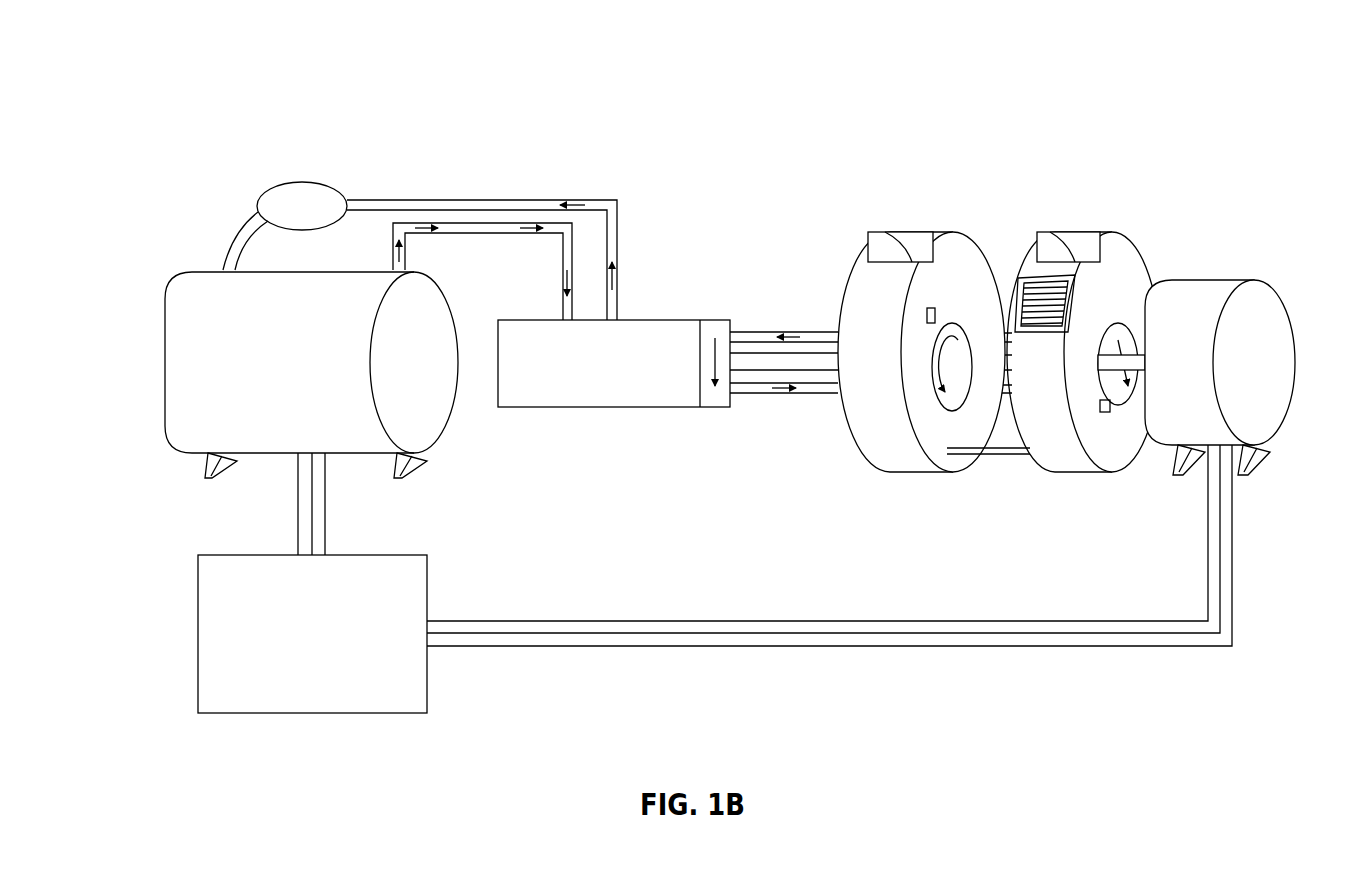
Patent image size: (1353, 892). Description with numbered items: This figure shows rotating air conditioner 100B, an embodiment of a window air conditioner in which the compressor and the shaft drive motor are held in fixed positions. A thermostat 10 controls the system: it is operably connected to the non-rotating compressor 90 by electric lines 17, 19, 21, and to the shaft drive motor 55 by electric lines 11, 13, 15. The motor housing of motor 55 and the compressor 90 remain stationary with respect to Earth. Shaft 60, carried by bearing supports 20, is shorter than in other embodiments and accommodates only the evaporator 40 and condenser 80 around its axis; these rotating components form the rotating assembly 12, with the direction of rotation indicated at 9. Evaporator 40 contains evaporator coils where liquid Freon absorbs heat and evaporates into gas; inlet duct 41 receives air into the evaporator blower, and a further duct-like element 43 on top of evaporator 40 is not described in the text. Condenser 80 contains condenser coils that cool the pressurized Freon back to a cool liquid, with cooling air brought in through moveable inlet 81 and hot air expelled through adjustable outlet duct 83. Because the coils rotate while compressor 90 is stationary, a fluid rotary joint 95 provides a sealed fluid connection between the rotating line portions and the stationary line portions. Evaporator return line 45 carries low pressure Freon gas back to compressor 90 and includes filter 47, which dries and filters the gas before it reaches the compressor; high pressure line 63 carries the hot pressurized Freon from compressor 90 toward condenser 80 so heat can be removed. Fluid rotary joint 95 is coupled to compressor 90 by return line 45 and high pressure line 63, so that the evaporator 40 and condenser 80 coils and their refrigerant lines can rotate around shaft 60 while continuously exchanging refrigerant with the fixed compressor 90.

The rotating air conditioner 100B is at (223, 98).
The rotation direction arrow 9 is at (976, 404).
The thermostat 10 is at (220, 714).
The electric line 11 is at (639, 620).
The rotary heater assembly 12 is at (952, 210).
The electric line 13 is at (789, 632).
The electric line 15 is at (690, 647).
The electric line 17 is at (297, 522).
The electric line 19 is at (314, 546).
The bearing support 20 is at (990, 456).
The electric line 21 is at (327, 516).
The evaporator 40 is at (900, 473).
The inlet duct 41 is at (926, 313).
The inlet block 43 is at (900, 232).
The evaporator return line 45 is at (462, 200).
The filter 47 is at (302, 182).
The shaft drive motor 55 is at (1265, 303).
The shaft 60 is at (1126, 344).
The high pressure line 63 is at (512, 234).
The condenser 80 is at (1070, 473).
The moveable inlet 81 is at (1099, 413).
The adjustable outlet duct 83 is at (1068, 232).
The compressor 90 is at (176, 302).
The fluid rotary joint 95 is at (598, 408).